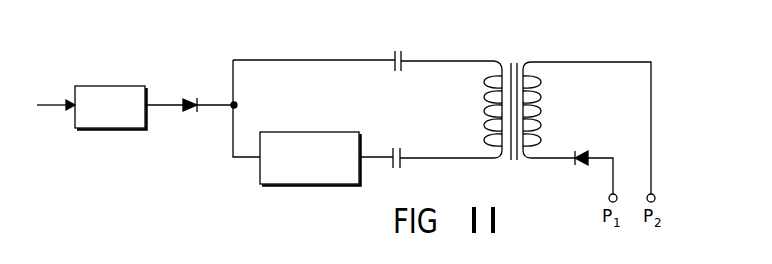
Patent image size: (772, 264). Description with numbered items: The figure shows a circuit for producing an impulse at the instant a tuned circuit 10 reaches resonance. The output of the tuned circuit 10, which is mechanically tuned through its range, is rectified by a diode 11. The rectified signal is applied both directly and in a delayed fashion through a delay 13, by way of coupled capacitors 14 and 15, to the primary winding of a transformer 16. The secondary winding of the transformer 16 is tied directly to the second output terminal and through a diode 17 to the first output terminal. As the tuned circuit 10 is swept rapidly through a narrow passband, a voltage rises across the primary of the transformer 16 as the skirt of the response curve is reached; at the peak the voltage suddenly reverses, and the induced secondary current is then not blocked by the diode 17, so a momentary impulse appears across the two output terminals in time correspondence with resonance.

The tuned circuit 10 is at (127, 85).
The diode 11 is at (188, 97).
The delay 13 is at (338, 131).
The capacitor 14 is at (405, 55).
The capacitor 15 is at (405, 150).
The transformer 16 is at (514, 48).
The diode 17 is at (583, 152).